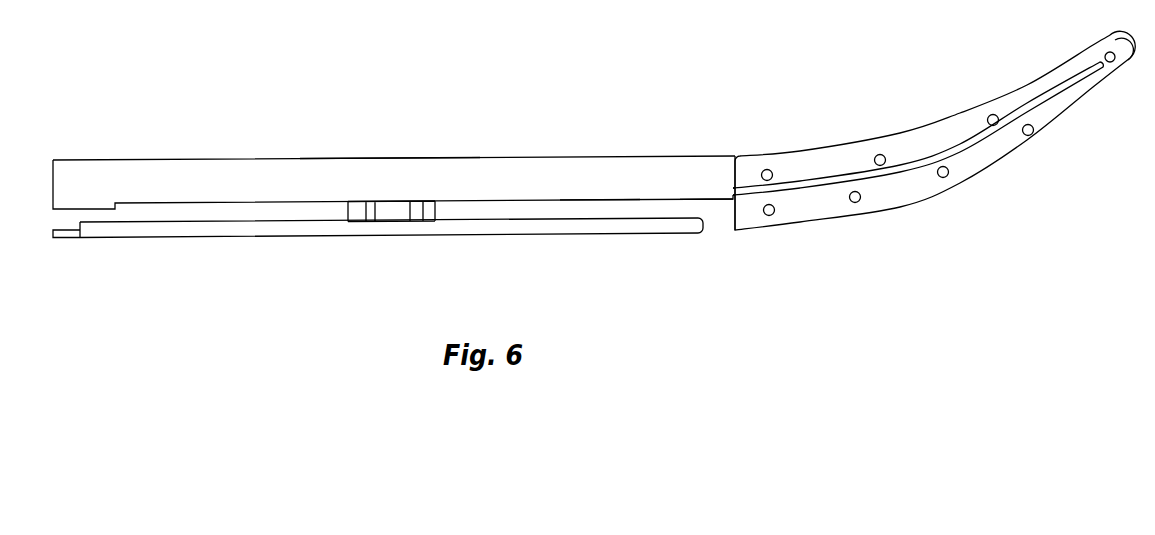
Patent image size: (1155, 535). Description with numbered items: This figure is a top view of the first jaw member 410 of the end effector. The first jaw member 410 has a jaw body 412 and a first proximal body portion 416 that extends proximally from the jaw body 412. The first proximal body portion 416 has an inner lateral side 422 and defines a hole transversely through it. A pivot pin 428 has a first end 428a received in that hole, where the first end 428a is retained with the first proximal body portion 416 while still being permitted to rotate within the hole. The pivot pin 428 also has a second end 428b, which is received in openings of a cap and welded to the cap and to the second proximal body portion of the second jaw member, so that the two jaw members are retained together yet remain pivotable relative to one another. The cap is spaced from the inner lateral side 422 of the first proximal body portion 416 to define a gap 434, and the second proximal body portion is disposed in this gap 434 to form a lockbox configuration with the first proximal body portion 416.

The first jaw member 410 is at (719, 151).
The jaw body 412 is at (901, 134).
The first proximal body portion 416 is at (638, 154).
The inner lateral side 422 is at (711, 201).
The pivot pin 428 is at (348, 207).
The first end 428a is at (394, 157).
The second end 428b is at (382, 238).
The gap 434 is at (604, 206).